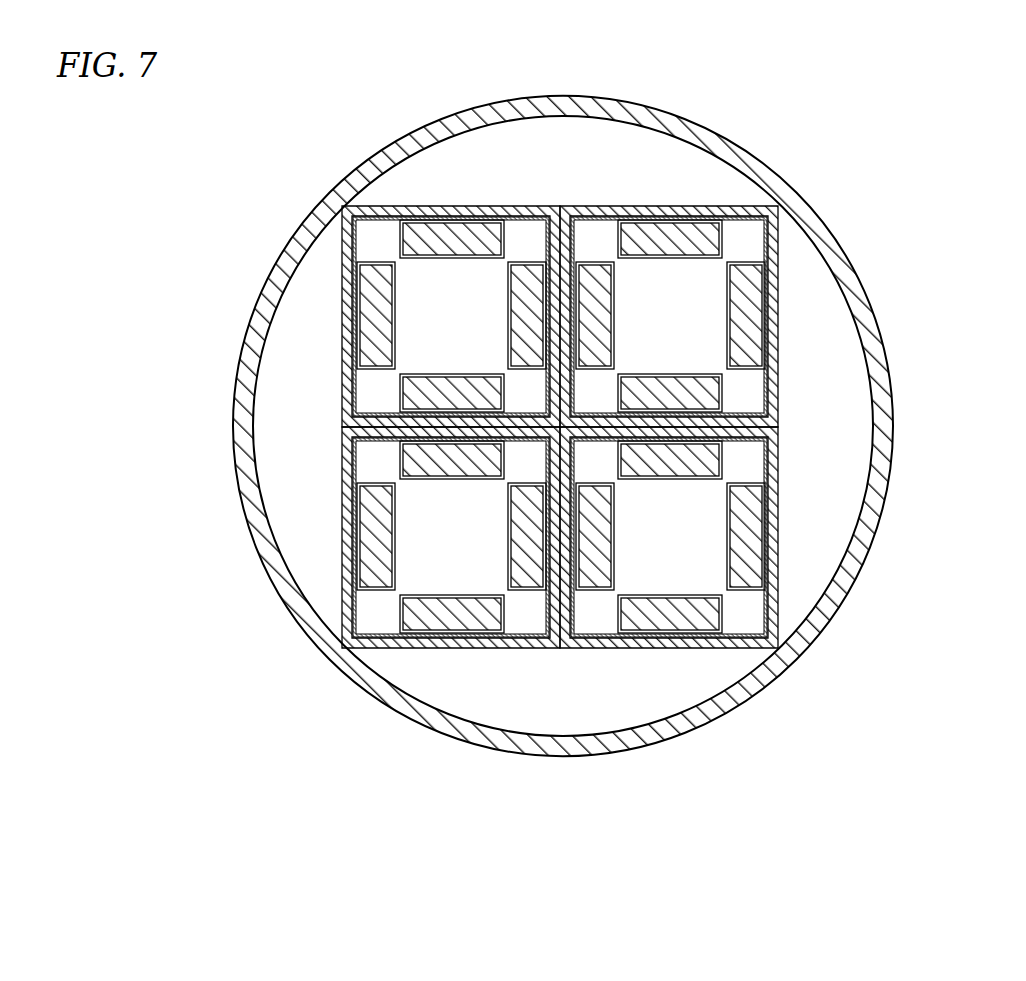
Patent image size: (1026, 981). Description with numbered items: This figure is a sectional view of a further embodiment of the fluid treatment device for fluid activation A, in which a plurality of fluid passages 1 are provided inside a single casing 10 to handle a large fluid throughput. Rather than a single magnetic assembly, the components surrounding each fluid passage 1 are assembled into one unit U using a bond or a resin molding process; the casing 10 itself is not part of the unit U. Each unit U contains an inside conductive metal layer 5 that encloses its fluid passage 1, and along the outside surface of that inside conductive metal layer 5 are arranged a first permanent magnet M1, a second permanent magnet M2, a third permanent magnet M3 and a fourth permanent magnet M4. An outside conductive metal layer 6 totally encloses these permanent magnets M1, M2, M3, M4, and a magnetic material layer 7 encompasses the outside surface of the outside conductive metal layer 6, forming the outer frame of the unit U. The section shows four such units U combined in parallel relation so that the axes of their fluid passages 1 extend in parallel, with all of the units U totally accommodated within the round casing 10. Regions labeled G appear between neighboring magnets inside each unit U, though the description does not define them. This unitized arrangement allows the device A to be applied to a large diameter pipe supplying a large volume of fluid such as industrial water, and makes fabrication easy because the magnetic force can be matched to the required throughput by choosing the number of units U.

The fluid treatment device for fluid activation A is at (580, 428).
The casing 10 is at (872, 483).
The unit U is at (550, 428).
The magnetic material layer 7 is at (350, 208).
The fluid passage 1 is at (345, 209).
The first permanent magnet M1 is at (423, 235).
The second permanent magnet M2 is at (362, 285).
The third permanent magnet M3 is at (559, 573).
The fourth permanent magnet M4 is at (507, 282).
The gap G is at (392, 257).
The outside conductive metal layer 6 is at (378, 362).
The inside conductive metal layer 5 is at (418, 290).